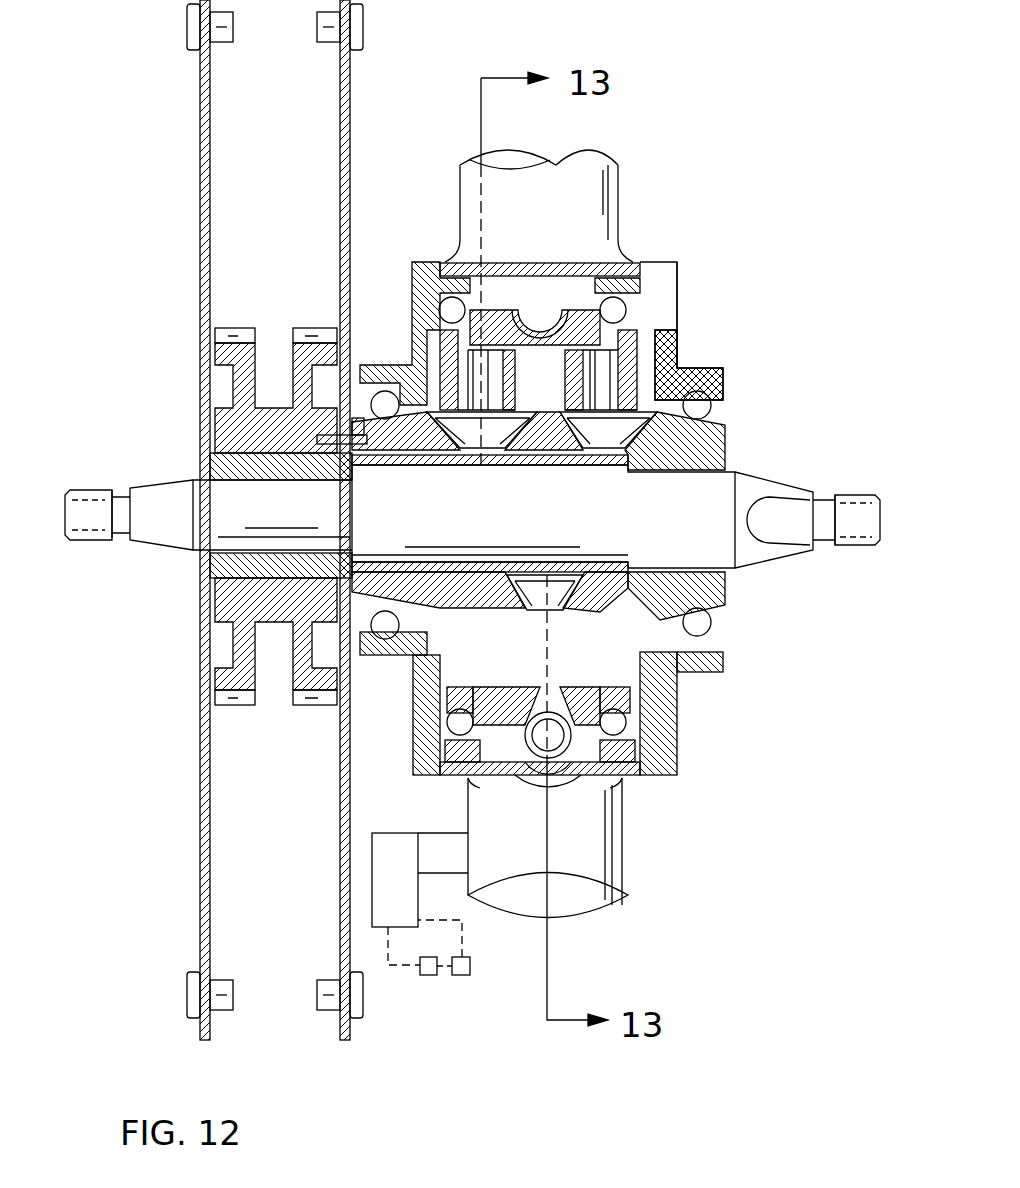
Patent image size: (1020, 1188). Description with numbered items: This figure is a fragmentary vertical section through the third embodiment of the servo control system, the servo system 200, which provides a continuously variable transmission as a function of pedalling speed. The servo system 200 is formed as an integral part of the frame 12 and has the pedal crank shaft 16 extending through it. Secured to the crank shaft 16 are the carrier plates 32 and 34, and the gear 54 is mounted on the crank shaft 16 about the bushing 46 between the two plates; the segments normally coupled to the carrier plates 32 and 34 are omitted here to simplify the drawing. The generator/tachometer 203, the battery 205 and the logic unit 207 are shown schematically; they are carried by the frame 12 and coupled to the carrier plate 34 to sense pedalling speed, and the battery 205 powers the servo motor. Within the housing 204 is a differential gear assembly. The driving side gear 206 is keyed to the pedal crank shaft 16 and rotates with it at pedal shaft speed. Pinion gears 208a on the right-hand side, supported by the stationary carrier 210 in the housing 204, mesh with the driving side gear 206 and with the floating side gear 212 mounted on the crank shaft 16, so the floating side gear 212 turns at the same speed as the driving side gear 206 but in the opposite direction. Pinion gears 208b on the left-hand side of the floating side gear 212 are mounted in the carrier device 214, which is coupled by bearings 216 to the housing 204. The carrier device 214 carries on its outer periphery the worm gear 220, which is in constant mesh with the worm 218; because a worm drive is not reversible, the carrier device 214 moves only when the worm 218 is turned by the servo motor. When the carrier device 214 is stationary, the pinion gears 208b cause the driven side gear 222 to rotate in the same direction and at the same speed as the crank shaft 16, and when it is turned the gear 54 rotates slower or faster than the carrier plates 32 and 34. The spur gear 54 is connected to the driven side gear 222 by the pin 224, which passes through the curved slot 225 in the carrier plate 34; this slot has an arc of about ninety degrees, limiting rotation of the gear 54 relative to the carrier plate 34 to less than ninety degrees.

The frame 12 is at (628, 197).
The pedal crank shaft 16 is at (207, 487).
The carrier plate 32 is at (205, 812).
The carrier plate 34 is at (345, 812).
The bushing 46 is at (222, 563).
The gear 54 is at (222, 593).
The servo system 200 is at (578, 524).
The generator/tachometer 203 is at (395, 840).
The housing 204 is at (679, 300).
The battery 205 is at (430, 976).
The driving side gear 206 is at (727, 447).
The logic unit 207 is at (465, 976).
The pinion gear 208a is at (607, 440).
The pinion gear 208b is at (476, 438).
The stationary carrier 210 is at (660, 345).
The floating side gear 212 is at (545, 602).
The carrier device 214 is at (500, 318).
The bearings 216 is at (447, 298).
The worm 218 is at (548, 718).
The worm gear 220 is at (548, 318).
The driven side gear 222 is at (408, 450).
The pin 224 is at (330, 447).
The curved slot 225 is at (340, 432).